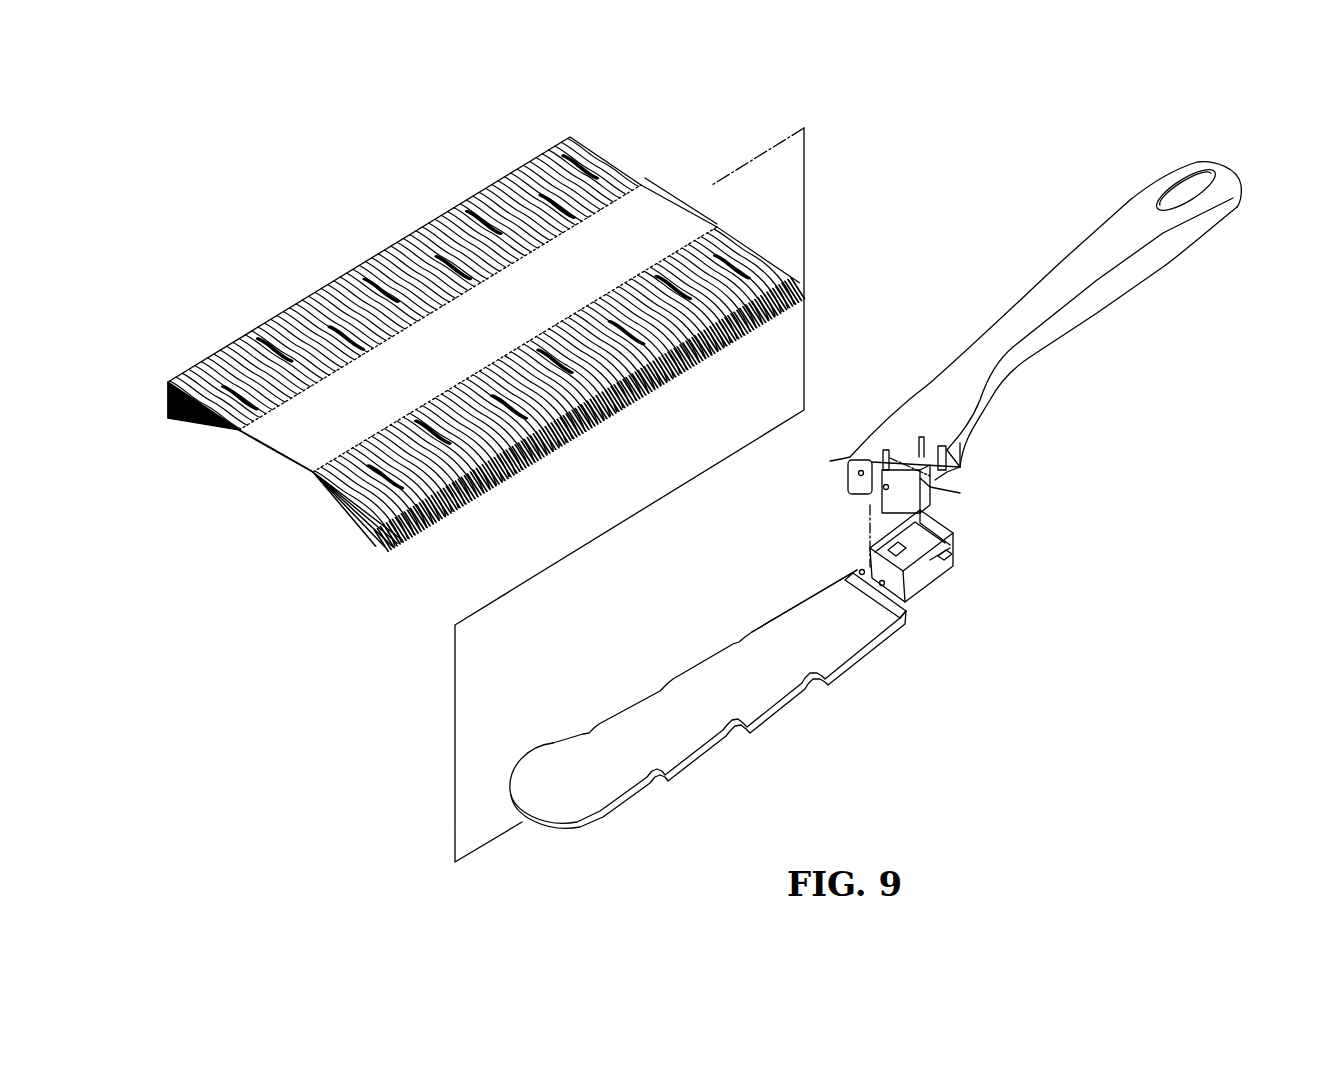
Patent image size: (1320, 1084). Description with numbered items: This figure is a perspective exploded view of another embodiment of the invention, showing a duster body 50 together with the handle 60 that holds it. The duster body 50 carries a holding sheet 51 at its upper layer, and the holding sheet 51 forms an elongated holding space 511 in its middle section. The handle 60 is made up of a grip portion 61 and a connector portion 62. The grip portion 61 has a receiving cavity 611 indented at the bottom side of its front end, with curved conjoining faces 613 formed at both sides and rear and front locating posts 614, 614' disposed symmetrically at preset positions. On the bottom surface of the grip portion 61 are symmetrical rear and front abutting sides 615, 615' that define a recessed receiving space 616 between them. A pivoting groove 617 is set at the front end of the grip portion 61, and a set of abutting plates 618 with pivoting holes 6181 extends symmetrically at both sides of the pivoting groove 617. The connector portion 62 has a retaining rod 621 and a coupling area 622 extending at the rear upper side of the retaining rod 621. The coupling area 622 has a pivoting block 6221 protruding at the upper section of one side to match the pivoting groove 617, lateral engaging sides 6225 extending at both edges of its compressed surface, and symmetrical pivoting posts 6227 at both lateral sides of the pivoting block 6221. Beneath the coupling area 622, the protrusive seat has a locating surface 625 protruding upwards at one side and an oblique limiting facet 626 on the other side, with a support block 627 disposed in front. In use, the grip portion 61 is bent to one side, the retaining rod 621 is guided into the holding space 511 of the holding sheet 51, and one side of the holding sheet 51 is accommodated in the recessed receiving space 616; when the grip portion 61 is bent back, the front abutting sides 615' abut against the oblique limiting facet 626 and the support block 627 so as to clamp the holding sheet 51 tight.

The duster body 50 is at (265, 500).
The holding sheet 51 is at (668, 210).
The holding space 511 is at (508, 320).
The handle 60 is at (1122, 720).
The grip portion 61 is at (1170, 265).
The receiving cavity 611 is at (947, 472).
The curved conjoining faces 613 is at (960, 443).
The rear locating post 614 is at (950, 369).
The front locating post 614' is at (876, 387).
The rear abutting side 615 is at (1035, 479).
The front abutting side 615' is at (988, 563).
The recessed receiving space 616 is at (960, 493).
The pivoting groove 617 is at (873, 497).
The abutting plates 618 is at (848, 457).
The pivoting holes 6181 is at (853, 478).
The connector portion 62 is at (632, 803).
The retaining rod 621 is at (747, 700).
The coupling area 622 is at (917, 550).
The pivoting block 6221 is at (853, 572).
The lateral engaging sides 6225 is at (957, 550).
The pivoting posts 6227 is at (858, 572).
The locating surface 625 is at (957, 560).
The oblique limiting facet 626 is at (905, 625).
The support block 627 is at (863, 603).